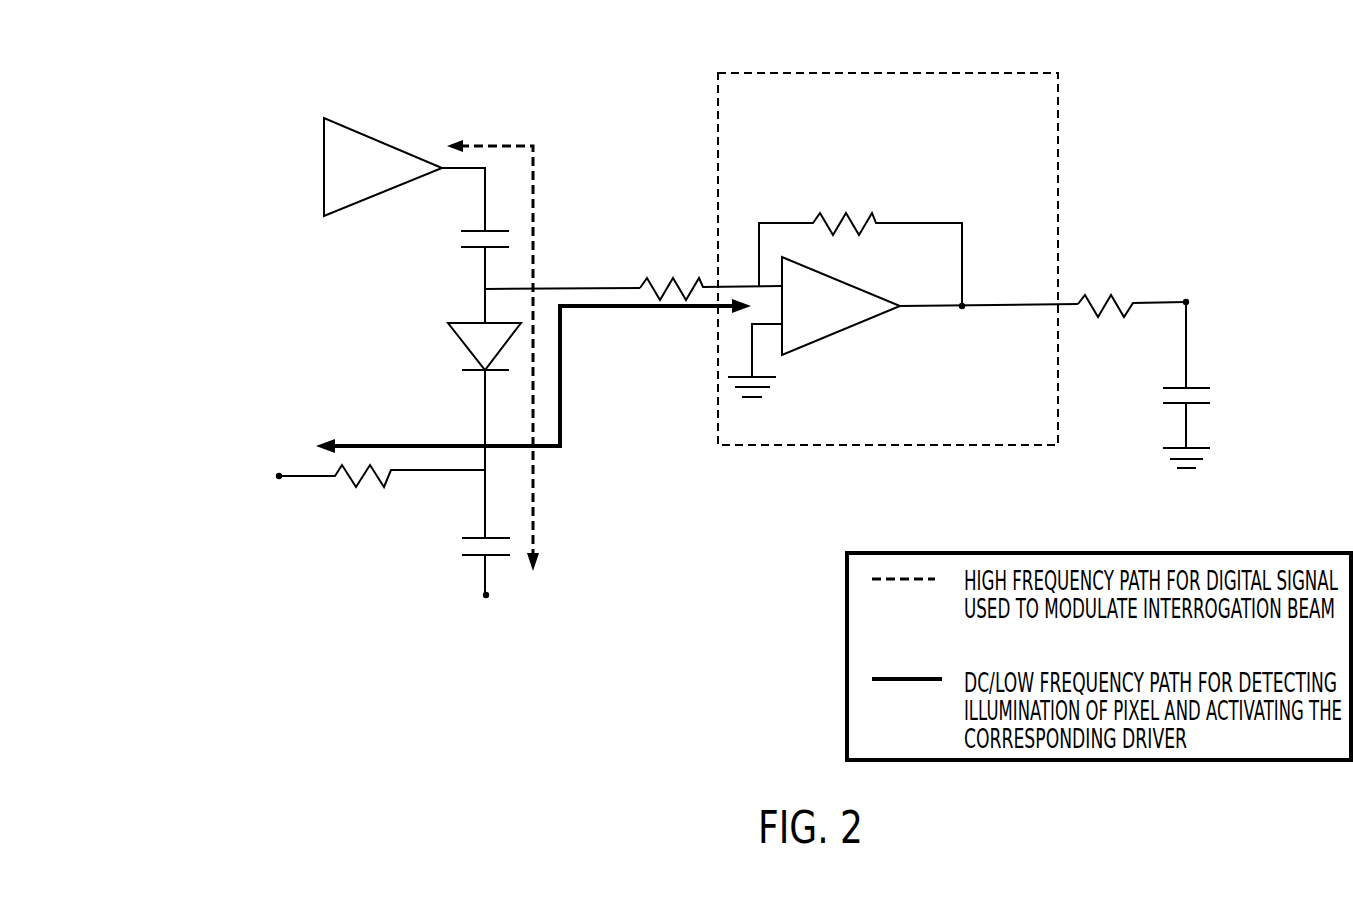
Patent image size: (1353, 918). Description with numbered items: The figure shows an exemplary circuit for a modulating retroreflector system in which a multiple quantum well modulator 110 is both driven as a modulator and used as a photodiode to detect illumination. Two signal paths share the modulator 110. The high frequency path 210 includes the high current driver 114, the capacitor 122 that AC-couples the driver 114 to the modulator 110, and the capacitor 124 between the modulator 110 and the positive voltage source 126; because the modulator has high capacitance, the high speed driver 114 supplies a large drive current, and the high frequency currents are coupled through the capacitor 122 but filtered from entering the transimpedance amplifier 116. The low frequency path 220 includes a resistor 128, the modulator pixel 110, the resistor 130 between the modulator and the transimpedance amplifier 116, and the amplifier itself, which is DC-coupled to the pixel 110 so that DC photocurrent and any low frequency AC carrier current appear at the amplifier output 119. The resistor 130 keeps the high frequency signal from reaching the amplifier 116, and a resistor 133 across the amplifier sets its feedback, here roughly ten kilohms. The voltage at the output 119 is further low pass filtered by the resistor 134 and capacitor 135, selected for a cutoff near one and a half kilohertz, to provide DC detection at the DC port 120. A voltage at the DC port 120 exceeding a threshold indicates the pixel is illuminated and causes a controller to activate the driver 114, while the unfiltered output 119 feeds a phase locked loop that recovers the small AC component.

The MQW modulator 110 is at (461, 341).
The high current driver 114 is at (324, 181).
The transimpedance amplifier 116 is at (940, 70).
The output of the transimpedance amplifier 119 is at (963, 310).
The DC port 120 is at (1187, 297).
The capacitor 122 is at (462, 238).
The capacitor 124 is at (463, 545).
The positive voltage source 126 is at (491, 598).
The resistor 128 is at (346, 481).
The resistor 130 is at (656, 277).
The resistor 133 is at (862, 216).
The resistor 134 is at (1119, 296).
The capacitor 135 is at (1200, 395).
The high frequency path 210 is at (510, 136).
The low frequency path 220 is at (563, 376).